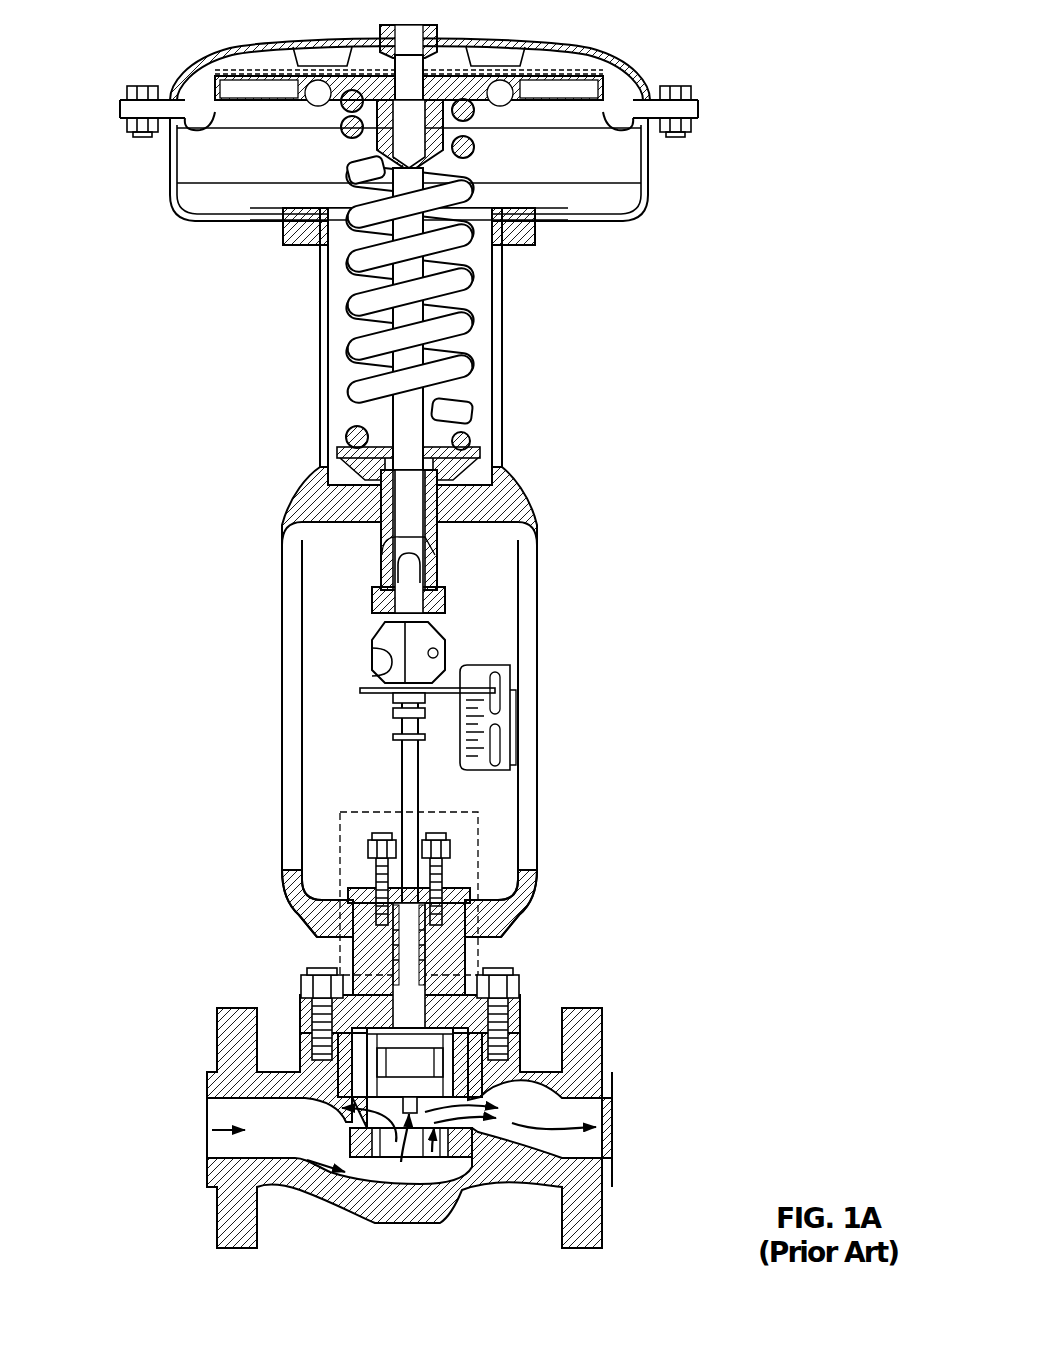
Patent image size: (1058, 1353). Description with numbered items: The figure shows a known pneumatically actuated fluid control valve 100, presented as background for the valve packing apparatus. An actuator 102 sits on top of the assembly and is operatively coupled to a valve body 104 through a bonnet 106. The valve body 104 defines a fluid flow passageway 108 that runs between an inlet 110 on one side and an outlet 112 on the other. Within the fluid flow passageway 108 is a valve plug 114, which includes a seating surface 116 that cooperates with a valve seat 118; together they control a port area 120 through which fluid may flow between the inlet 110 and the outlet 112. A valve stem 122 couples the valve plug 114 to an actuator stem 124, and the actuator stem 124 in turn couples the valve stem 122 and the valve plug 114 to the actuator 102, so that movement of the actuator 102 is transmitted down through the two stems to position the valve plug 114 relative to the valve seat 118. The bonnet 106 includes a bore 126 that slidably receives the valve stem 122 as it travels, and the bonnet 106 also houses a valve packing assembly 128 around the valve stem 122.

The fluid control valve 100 is at (175, 38).
The actuator 102 is at (135, 157).
The valve body 104 is at (303, 1193).
The bonnet 106 is at (355, 958).
The fluid flow passageway 108 is at (303, 1152).
The inlet 110 is at (207, 1147).
The outlet 112 is at (612, 1130).
The valve plug 114 is at (317, 1030).
The seating surface 116 is at (445, 1093).
The valve seat 118 is at (453, 1165).
The port area 120 is at (395, 1153).
The valve stem 122 is at (400, 800).
The actuator stem 124 is at (440, 535).
The bore 126 is at (395, 978).
The valve packing assembly 128 is at (457, 867).